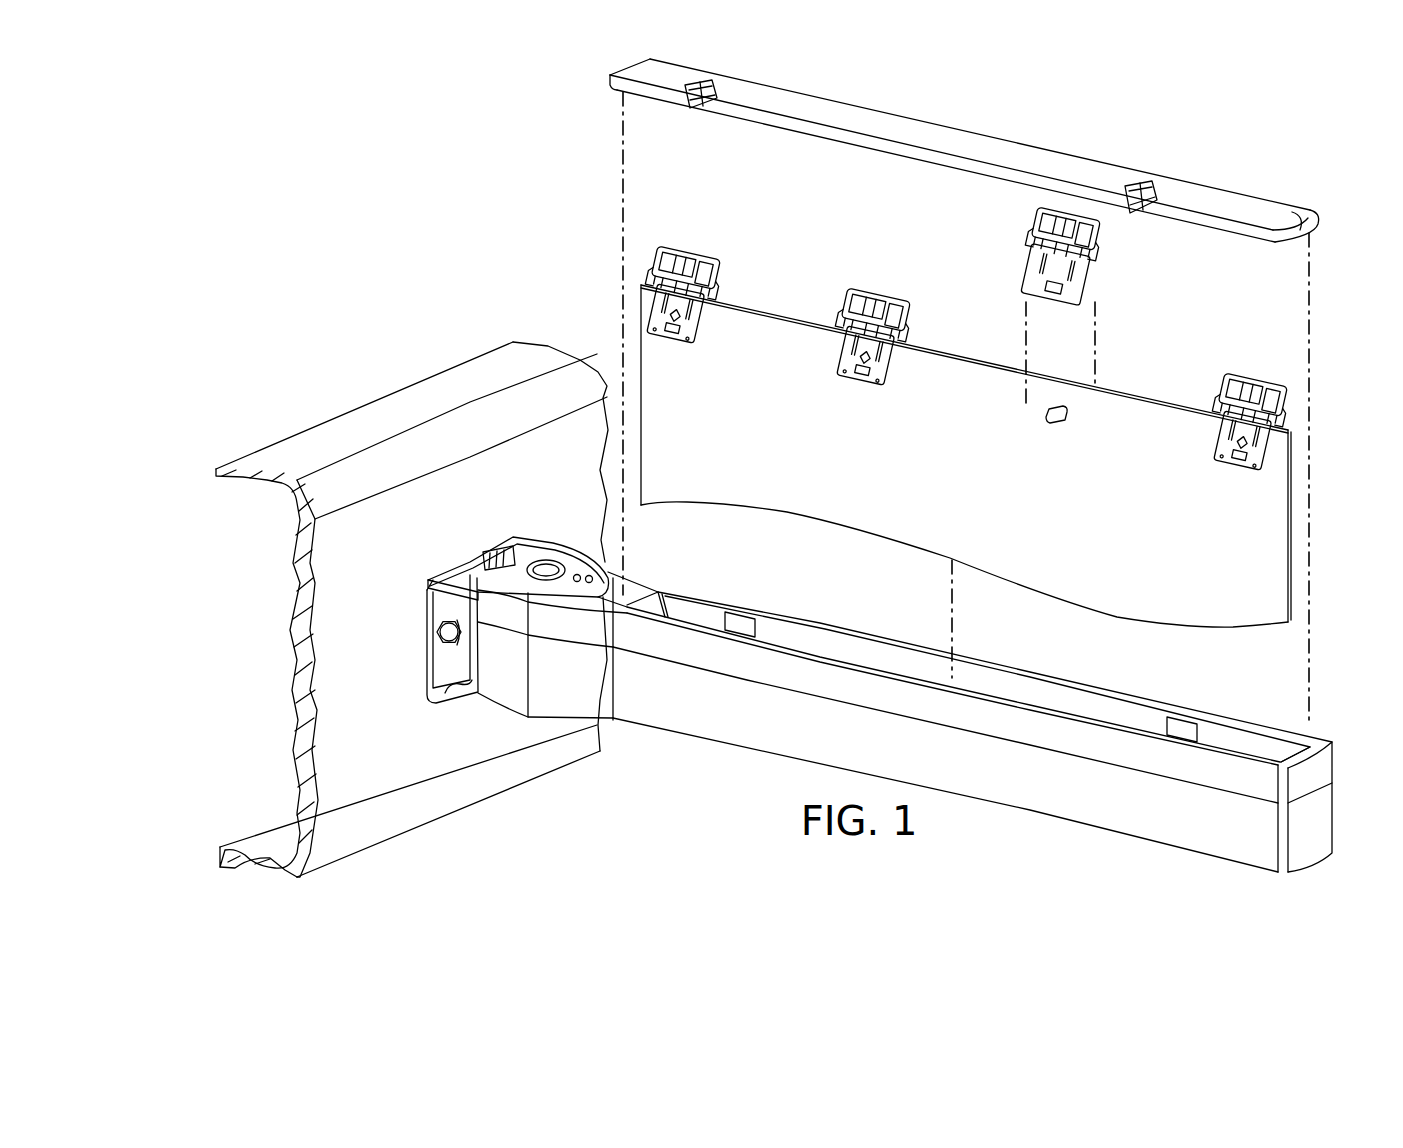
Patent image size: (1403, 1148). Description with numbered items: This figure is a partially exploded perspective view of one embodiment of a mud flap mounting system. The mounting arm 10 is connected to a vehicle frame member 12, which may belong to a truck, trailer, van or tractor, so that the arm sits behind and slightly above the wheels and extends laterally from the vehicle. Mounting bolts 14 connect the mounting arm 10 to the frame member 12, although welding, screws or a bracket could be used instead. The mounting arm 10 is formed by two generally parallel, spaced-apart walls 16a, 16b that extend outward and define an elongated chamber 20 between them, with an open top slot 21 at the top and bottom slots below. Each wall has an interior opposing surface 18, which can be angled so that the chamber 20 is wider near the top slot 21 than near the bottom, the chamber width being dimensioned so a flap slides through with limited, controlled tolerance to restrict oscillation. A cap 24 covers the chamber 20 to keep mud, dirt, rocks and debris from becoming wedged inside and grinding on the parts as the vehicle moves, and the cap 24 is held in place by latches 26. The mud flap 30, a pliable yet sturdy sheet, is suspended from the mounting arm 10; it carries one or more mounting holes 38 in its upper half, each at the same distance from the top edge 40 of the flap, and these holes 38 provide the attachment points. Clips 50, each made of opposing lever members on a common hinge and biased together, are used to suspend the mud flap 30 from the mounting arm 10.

The mounting arm 10 is at (734, 772).
The vehicle frame member 12 is at (365, 810).
The mounting bolts 14 is at (440, 652).
The wall 16a is at (1040, 800).
The wall 16b is at (1097, 686).
The interior opposing surface 18 is at (1265, 742).
The elongated chamber 20 is at (836, 635).
The top slot 21 is at (718, 603).
The cap 24 is at (964, 150).
The latches 26 is at (692, 106).
The mud flap 30 is at (966, 456).
The mounting holes 38 is at (1043, 420).
The top edge 40 is at (975, 356).
The clip 50 is at (963, 337).